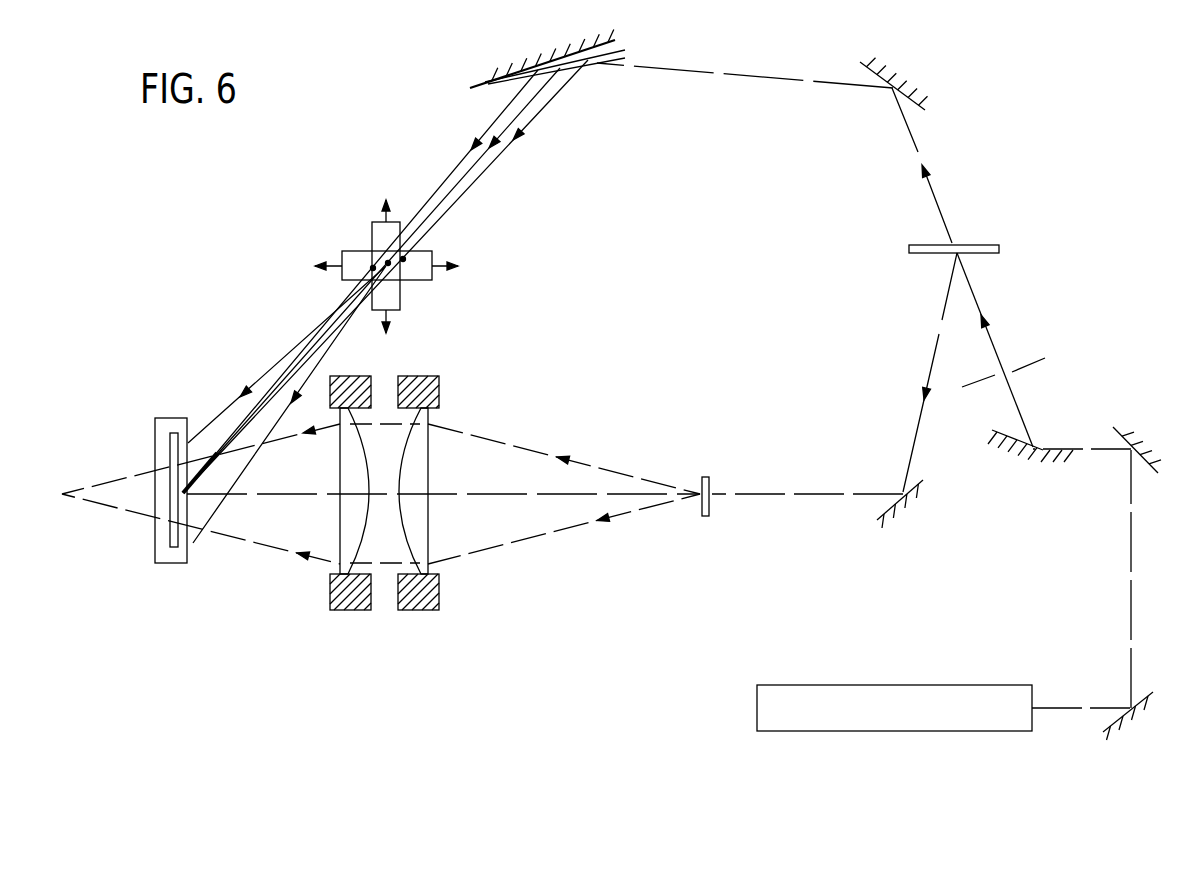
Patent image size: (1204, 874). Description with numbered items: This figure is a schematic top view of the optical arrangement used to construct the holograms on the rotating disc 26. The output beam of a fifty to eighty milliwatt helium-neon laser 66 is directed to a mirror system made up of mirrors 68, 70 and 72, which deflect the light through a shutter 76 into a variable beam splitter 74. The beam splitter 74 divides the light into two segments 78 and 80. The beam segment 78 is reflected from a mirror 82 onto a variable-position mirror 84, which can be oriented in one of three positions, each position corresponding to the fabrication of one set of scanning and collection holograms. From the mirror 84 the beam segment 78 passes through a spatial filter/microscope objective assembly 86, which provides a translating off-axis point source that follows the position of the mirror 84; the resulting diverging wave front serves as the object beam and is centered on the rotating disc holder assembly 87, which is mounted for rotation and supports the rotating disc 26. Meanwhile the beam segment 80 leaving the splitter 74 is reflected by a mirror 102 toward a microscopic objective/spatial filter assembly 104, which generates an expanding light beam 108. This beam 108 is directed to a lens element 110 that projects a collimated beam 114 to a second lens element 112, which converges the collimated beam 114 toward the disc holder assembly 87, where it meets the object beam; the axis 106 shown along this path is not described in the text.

The rotating disc 26 is at (177, 547).
The helium-neon laser 66 is at (933, 685).
The mirror 68 is at (1140, 695).
The mirror 70 is at (1113, 427).
The mirror 72 is at (1003, 433).
The variable beam splitter 74 is at (972, 248).
The shutter 76 is at (1025, 364).
The beam segment 78 is at (912, 138).
The beam segment 80 is at (932, 357).
The mirror 82 is at (860, 62).
The variable-position mirror 84 is at (617, 34).
The spatial filter/microscope objective assembly 86 is at (355, 252).
The rotating disc holder assembly 87 is at (172, 418).
The mirror 102 is at (877, 517).
The microscopic objective/spatial filter assembly 104 is at (707, 475).
The optical axis beam 106 is at (533, 497).
The expanding light beam 108 is at (585, 463).
The lens element 110 is at (423, 475).
The second lens element 112 is at (347, 512).
The collimated beam 114 is at (395, 562).